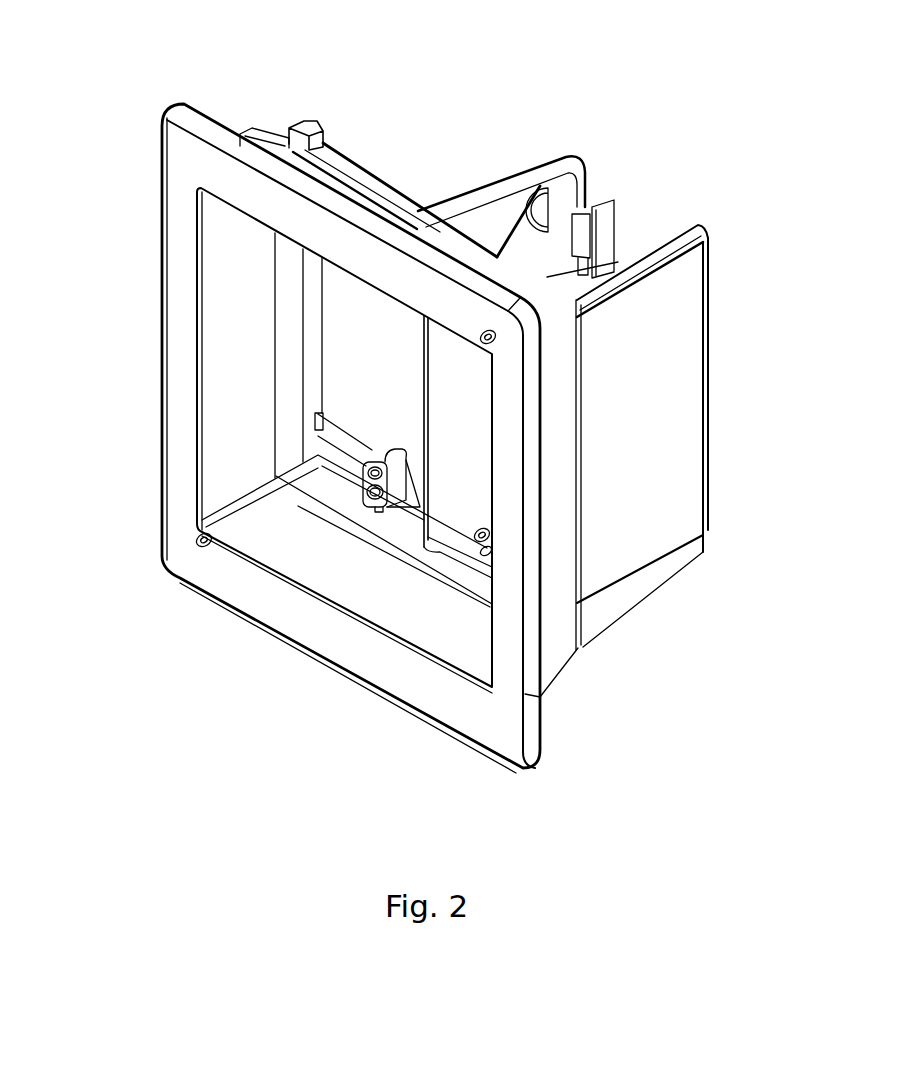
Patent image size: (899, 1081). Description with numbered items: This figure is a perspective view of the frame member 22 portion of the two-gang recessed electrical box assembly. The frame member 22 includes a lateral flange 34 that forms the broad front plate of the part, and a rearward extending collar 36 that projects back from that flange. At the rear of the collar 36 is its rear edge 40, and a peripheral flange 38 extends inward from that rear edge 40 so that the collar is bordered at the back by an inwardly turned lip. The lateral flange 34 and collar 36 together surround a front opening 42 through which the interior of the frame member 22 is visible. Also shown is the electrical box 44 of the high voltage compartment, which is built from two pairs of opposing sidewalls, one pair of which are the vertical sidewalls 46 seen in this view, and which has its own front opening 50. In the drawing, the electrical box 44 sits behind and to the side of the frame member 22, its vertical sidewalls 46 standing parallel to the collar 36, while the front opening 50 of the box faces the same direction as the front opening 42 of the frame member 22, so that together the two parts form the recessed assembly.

The frame member 22 is at (122, 105).
The lateral flange 34 is at (343, 249).
The rearward extending collar 36 is at (362, 581).
The peripheral flange 38 is at (313, 343).
The rear edge 40 is at (310, 408).
The front opening 42 is at (243, 305).
The electrical box 44 is at (690, 289).
The vertical sidewalls 46 is at (472, 377).
The front opening 50 is at (455, 413).